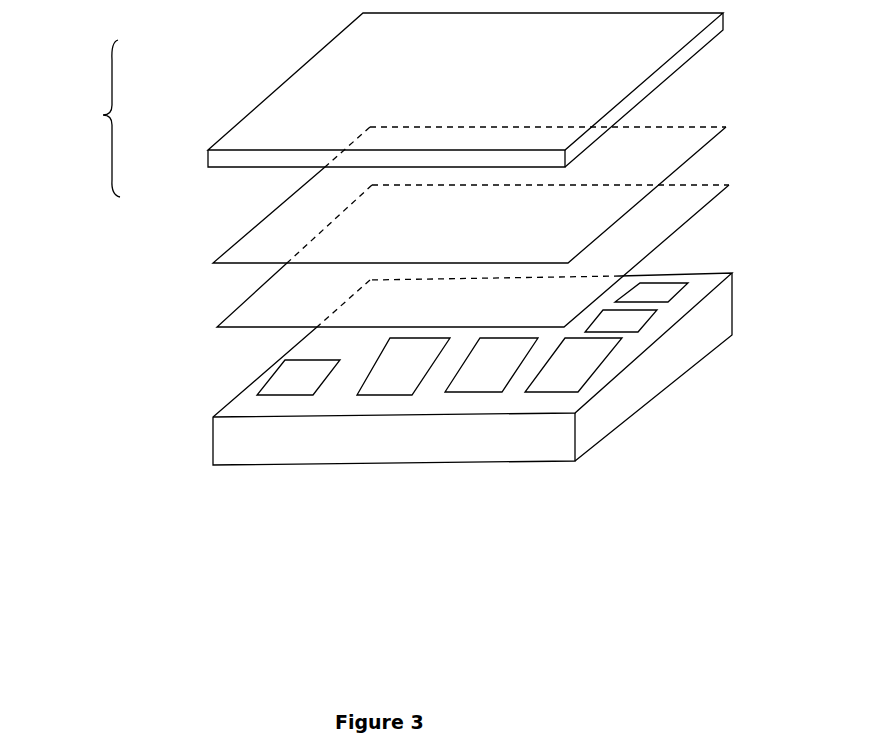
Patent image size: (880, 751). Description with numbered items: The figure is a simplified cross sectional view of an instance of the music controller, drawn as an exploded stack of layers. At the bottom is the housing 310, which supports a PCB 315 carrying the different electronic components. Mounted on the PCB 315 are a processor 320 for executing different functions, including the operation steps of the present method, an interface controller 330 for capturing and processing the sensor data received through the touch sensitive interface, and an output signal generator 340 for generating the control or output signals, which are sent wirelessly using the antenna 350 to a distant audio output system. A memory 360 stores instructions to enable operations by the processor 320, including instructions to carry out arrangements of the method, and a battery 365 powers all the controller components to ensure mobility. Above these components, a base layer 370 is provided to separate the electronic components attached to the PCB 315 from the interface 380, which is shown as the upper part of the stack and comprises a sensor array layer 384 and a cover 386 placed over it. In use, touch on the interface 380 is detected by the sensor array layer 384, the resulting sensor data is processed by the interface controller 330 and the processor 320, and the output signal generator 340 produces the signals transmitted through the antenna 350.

The housing 310 is at (200, 447).
The PCB 315 is at (243, 404).
The processor 320 is at (298, 377).
The interface controller 330 is at (403, 366).
The output signal generator 340 is at (491, 365).
The antenna 350 is at (573, 365).
The memory 360 is at (621, 321).
The battery 365 is at (651, 292).
The base layer 370 is at (218, 310).
The interface 380 is at (80, 118).
The sensor array layer 384 is at (252, 220).
The cover 386 is at (270, 90).